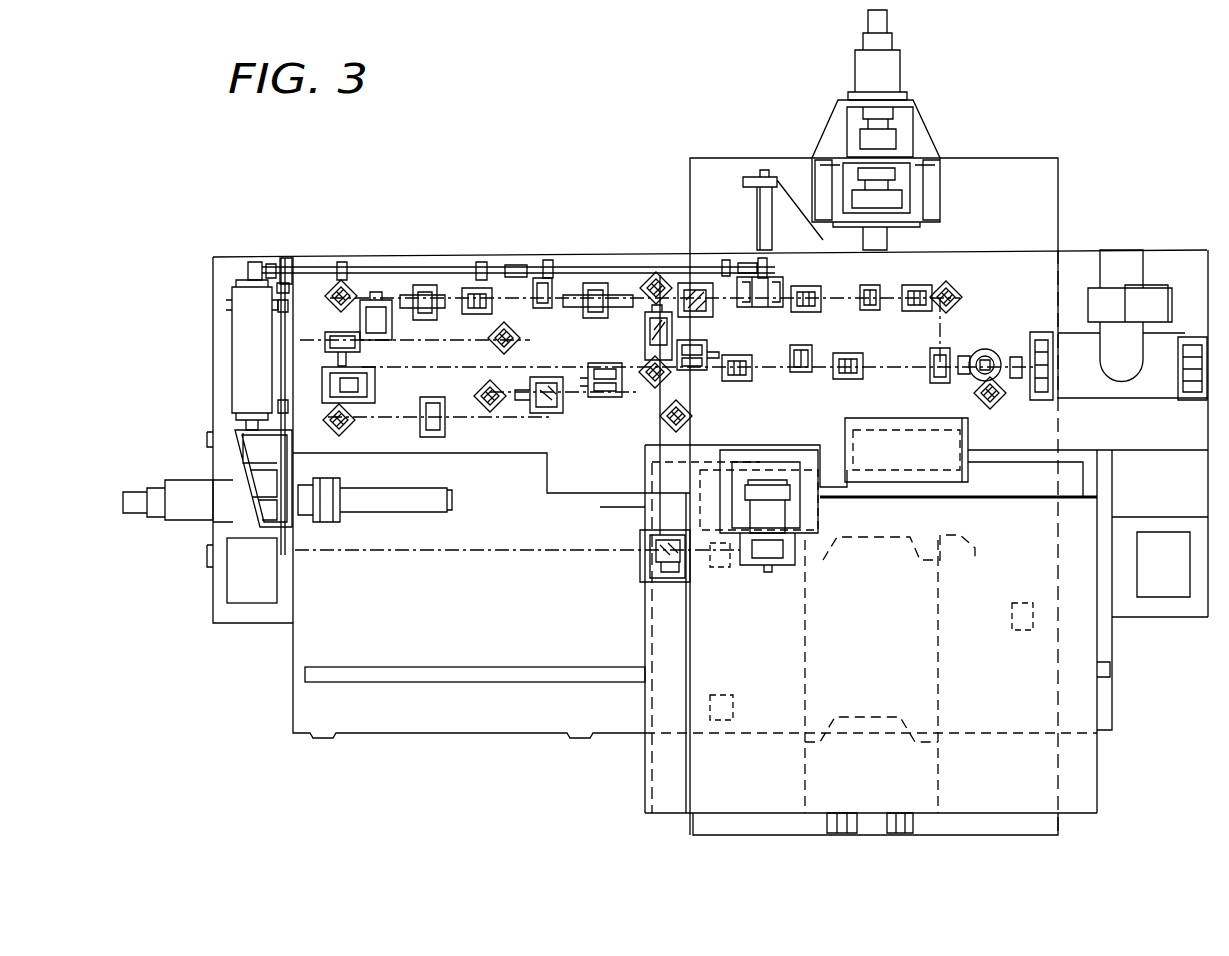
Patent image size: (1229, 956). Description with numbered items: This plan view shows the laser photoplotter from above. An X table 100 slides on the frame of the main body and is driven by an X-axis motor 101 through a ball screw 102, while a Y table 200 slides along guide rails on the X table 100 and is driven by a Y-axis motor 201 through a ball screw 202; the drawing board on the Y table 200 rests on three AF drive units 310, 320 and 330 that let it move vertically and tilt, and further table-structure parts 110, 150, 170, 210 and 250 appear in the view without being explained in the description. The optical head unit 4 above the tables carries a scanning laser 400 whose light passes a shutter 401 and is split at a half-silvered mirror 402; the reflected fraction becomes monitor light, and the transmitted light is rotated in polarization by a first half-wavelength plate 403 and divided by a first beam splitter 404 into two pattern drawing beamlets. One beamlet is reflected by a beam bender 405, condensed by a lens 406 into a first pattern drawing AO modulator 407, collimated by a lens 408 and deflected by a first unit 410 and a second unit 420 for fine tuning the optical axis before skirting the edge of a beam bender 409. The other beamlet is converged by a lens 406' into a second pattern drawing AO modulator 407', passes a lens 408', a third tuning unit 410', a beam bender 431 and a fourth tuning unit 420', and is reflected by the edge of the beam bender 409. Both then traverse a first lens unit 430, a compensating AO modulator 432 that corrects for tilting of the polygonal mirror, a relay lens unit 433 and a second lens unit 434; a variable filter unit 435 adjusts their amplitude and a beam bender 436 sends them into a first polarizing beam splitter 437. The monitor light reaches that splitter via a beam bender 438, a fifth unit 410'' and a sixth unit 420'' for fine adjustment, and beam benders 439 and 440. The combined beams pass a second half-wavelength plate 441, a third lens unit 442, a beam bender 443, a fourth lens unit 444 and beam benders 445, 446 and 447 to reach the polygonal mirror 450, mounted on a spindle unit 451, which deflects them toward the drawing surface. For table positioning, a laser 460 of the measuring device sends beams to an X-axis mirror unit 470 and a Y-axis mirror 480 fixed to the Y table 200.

The optical head unit 4 is at (1078, 262).
The X table 100 is at (749, 831).
The X-axis motor 101 is at (185, 520).
The ball screw 102 is at (418, 505).
The guide 110 is at (950, 560).
The slide 150 is at (945, 828).
The drive unit 170 is at (877, 823).
The Y table 200 is at (796, 806).
The Y-axis motor 201 is at (892, 66).
The ball screw 202 is at (882, 235).
The guide rail 210 is at (928, 620).
The column 250 is at (998, 808).
The AF drive unit 310 is at (1018, 630).
The AF drive unit 320 is at (722, 696).
The AF drive unit 330 is at (722, 568).
The scanning laser 400 is at (1167, 347).
The shutter 401 is at (1017, 378).
The half-silvered mirror 402 is at (990, 352).
The first half-wavelength plate 403 is at (965, 355).
The first beam splitter 404 is at (935, 383).
The beam bender 405 is at (952, 283).
The lens 406 is at (910, 321).
The lens 406' is at (840, 387).
The first pattern drawing AO modulator 407 is at (868, 316).
The second pattern drawing AO modulator 407' is at (805, 345).
The lens 408 is at (815, 283).
The lens 408' is at (761, 388).
The beam bender 409 is at (652, 280).
The first unit for fine tuning the optical axis 410 is at (758, 312).
The third unit for fine tuning the optical axis 410' is at (712, 381).
The fifth unit for fine adjusting the optical axis 410'' is at (587, 414).
The second unit for fine tuning the optical axis 420 is at (750, 243).
The fourth unit for fine tuning the optical axis 420' is at (630, 332).
The sixth unit for fine adjusting the optical axis 420'' is at (534, 413).
The first lens unit 430 is at (588, 285).
The beam bender 431 is at (653, 387).
The compensating AO modulator 432 is at (540, 282).
The valve 433 is at (477, 287).
The second lens unit 434 is at (415, 290).
The variable filter unit 435 is at (363, 298).
The beam bender 436 is at (327, 268).
The first polarizing beam splitter 437 is at (360, 345).
The beam bender 438 is at (990, 410).
The beam bender 439 is at (488, 384).
The beam bender 440 is at (520, 338).
The second half-wavelength plate 441 is at (330, 355).
The third lens unit 442 is at (350, 403).
The beam bender 443 is at (342, 437).
The fourth lens unit 444 is at (440, 437).
The beam bender 445 is at (663, 432).
The beam bender 446 is at (651, 555).
The beam bender 447 is at (652, 575).
The polygonal mirror 450 is at (800, 552).
The spindle unit 451 is at (800, 520).
The laser 460 is at (250, 318).
The X-axis mirror unit 470 is at (657, 772).
The Y-axis mirror 480 is at (1040, 485).